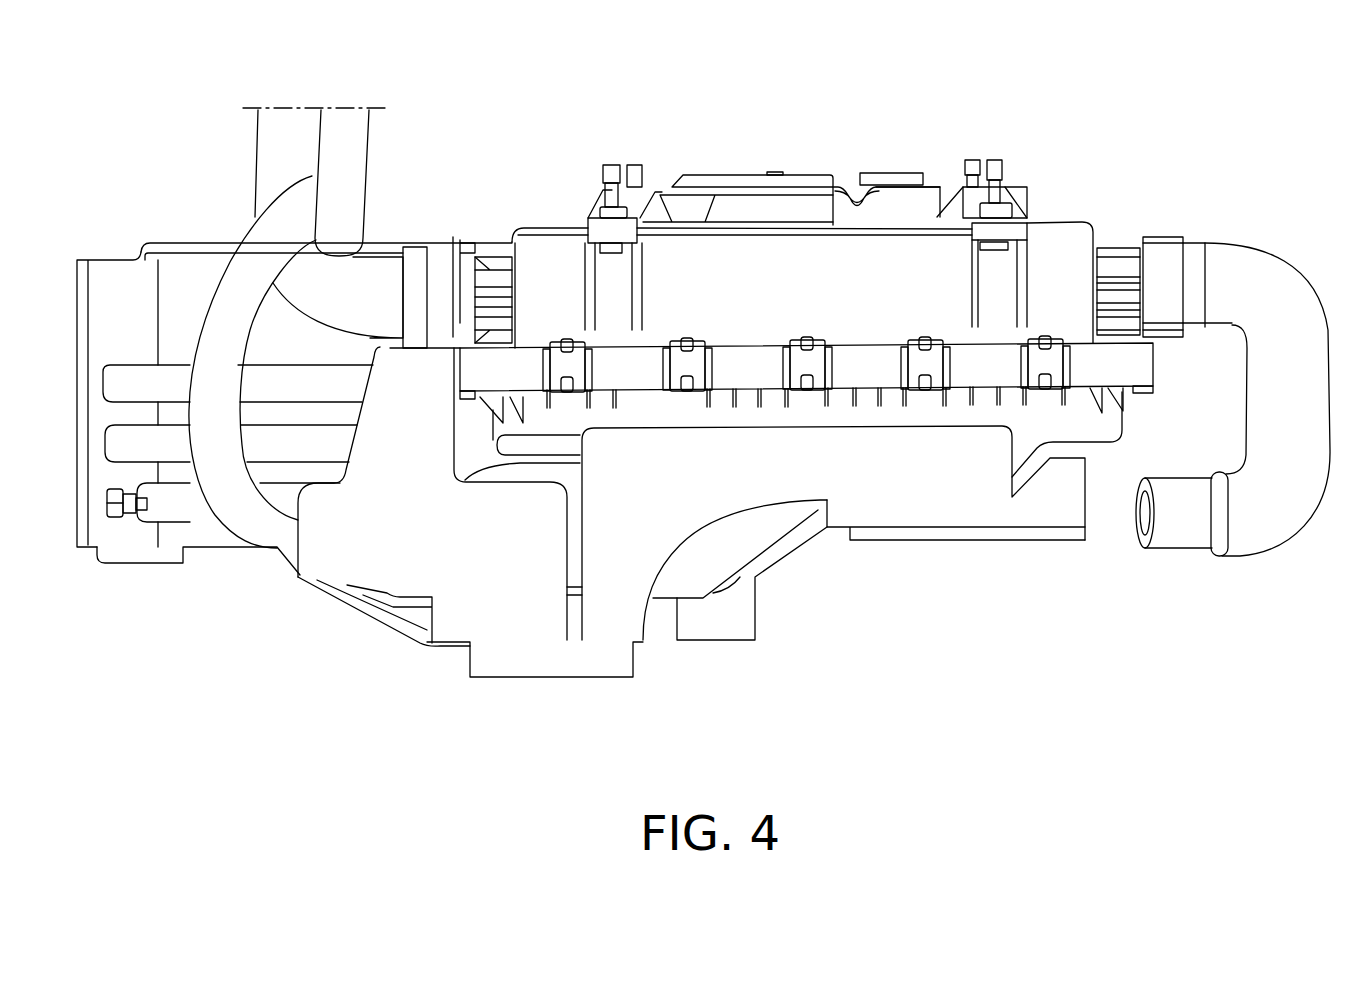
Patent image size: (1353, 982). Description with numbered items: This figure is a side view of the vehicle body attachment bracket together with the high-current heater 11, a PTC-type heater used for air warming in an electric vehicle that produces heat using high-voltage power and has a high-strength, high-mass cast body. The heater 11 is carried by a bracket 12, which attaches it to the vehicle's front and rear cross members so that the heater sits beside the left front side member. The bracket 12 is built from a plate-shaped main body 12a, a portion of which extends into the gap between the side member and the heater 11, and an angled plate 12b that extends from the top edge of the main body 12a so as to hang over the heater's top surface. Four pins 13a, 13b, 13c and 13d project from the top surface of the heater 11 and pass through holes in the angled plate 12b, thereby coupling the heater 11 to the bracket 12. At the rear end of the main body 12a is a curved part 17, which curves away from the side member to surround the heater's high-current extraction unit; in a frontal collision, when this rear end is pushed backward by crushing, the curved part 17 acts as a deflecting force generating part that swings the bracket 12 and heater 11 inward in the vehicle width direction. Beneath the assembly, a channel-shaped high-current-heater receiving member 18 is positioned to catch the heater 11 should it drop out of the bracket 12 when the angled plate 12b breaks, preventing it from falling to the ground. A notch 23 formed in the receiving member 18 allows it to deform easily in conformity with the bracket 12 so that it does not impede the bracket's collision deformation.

The high-current heater 11 is at (1062, 218).
The bracket 12 is at (190, 243).
The plate-shaped main body 12a is at (315, 358).
The angled plate 12b is at (804, 173).
The pin 13a is at (611, 163).
The pin 13b is at (633, 165).
The pin 13c is at (996, 160).
The pin 13d is at (972, 160).
The curved part 17 is at (114, 272).
The high-current-heater receiving member 18 is at (762, 613).
The notch 23 is at (648, 628).